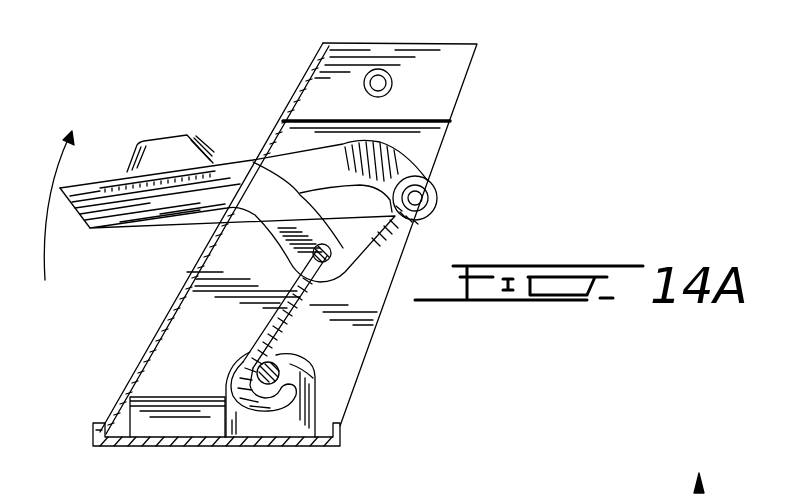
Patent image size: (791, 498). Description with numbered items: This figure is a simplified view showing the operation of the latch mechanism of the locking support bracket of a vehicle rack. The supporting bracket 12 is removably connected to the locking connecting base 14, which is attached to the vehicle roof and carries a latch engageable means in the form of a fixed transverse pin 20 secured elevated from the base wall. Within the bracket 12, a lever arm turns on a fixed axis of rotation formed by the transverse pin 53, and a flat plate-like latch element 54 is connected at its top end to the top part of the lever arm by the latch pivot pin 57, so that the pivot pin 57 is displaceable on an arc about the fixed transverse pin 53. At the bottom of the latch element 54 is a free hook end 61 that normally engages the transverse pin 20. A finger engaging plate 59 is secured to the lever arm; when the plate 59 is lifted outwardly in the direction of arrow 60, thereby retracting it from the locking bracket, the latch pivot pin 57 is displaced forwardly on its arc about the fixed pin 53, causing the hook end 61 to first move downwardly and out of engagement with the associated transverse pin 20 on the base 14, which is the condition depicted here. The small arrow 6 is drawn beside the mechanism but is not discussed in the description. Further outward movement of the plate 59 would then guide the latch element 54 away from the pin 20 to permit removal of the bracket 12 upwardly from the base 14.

The direction of movement arrow 6 is at (68, 180).
The supporting bracket 12 is at (300, 79).
The connecting base 14 is at (342, 427).
The transverse pin 20 is at (300, 362).
The transverse pin 53 is at (345, 248).
The latch element 54 is at (268, 332).
The latch pivot pin 57 is at (427, 193).
The finger engaging plate 59 is at (160, 172).
The arrow 60 is at (88, 152).
The hook end 61 is at (250, 395).